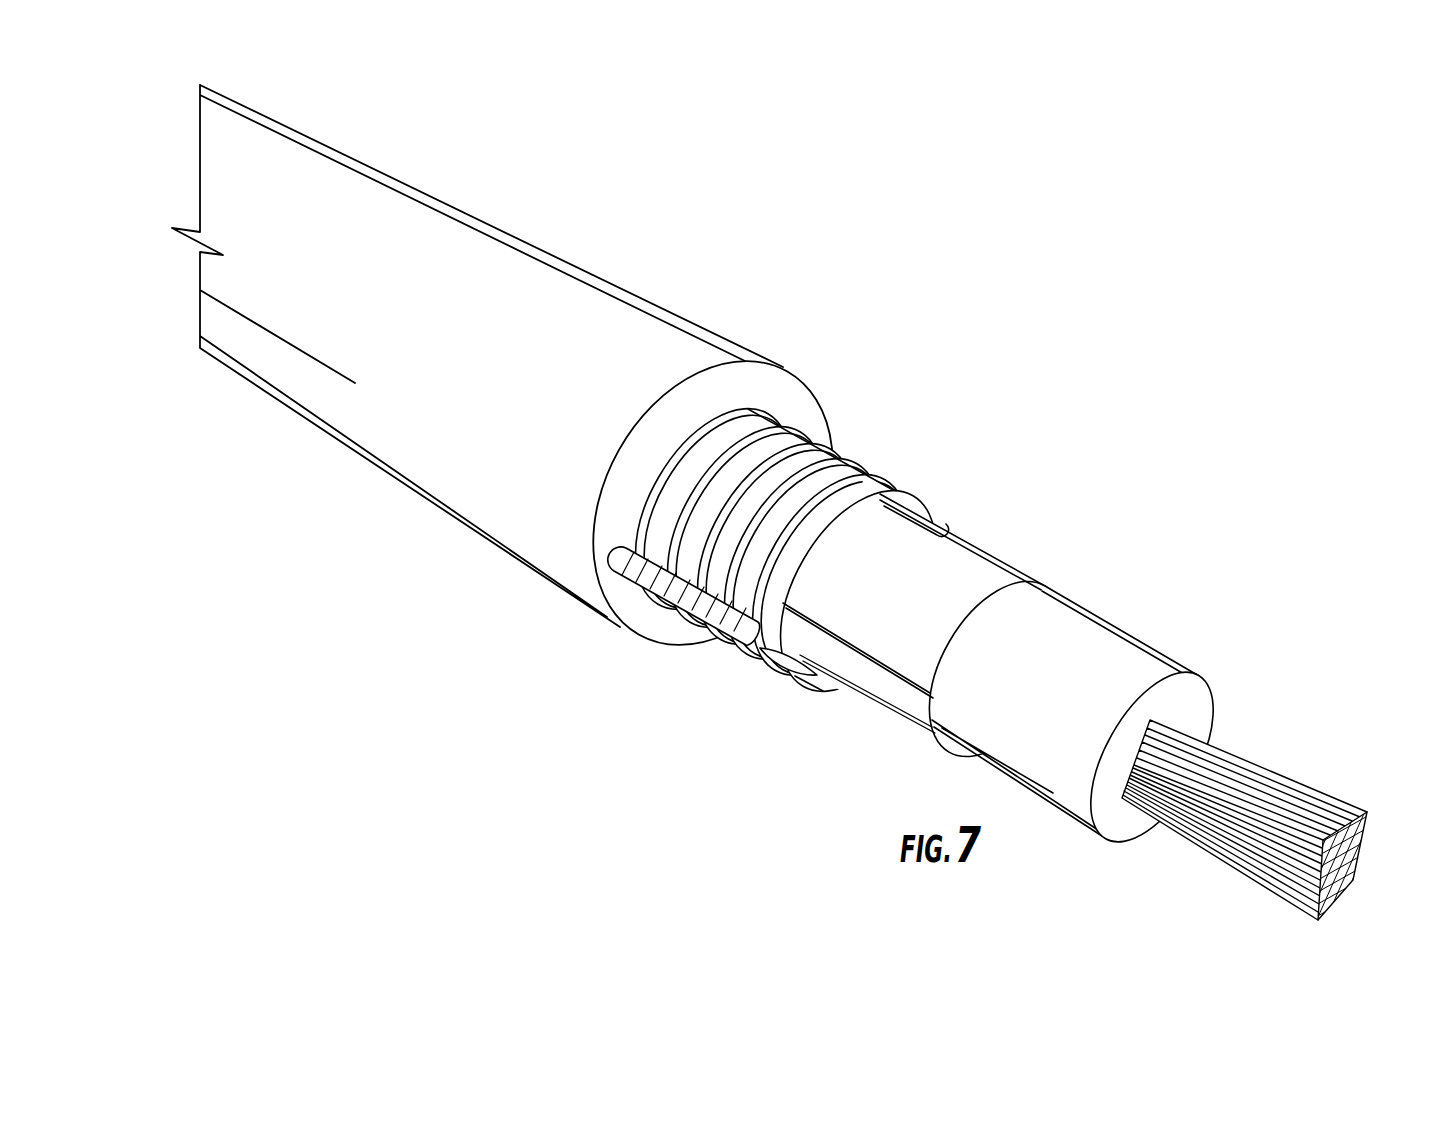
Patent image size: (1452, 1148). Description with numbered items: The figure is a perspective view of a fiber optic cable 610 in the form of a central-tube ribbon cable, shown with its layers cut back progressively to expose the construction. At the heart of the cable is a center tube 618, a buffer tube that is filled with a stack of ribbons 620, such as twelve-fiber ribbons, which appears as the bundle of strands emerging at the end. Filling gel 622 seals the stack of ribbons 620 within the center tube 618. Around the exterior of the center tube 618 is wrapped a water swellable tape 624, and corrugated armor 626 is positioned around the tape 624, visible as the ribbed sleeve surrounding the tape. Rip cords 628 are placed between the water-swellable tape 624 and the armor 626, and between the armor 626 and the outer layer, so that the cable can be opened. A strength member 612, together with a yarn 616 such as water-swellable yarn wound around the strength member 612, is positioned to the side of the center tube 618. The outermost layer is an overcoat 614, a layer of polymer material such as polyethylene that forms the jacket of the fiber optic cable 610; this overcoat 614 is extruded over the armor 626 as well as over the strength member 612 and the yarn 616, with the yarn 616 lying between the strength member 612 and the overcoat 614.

The fiber optic cable 610 is at (787, 511).
The strength member 612 is at (708, 613).
The overcoat 614 is at (637, 608).
The yarn 616 is at (718, 623).
The center tube 618 is at (1120, 665).
The stack of ribbons 620 is at (1293, 800).
The filling gel 622 is at (1188, 695).
The water swellable tape 624 is at (957, 575).
The corrugated armor 626 is at (827, 493).
The rip cords 628 is at (875, 663).